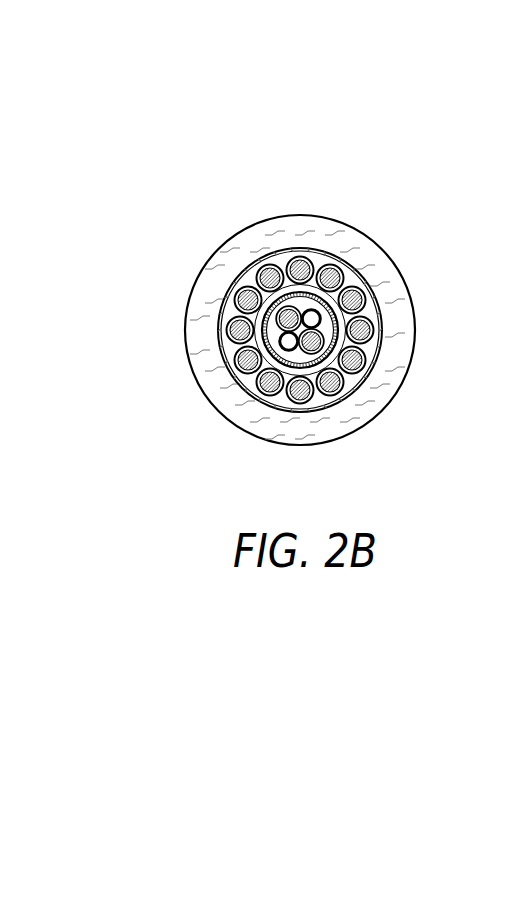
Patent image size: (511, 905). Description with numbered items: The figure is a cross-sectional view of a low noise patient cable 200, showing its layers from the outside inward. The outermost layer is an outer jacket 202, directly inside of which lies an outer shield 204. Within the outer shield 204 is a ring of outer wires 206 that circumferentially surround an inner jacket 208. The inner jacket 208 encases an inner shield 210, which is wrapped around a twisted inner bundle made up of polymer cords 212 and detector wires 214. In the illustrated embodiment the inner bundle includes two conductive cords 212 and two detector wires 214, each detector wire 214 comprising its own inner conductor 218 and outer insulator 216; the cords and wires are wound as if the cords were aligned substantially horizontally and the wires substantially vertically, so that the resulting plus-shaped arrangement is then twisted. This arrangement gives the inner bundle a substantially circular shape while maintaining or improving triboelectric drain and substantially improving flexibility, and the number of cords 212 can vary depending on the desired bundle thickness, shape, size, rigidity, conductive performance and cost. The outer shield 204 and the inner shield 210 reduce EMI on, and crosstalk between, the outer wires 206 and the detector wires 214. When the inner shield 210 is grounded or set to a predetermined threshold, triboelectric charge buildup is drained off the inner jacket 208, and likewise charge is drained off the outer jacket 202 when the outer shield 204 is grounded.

The low noise patient cable 200 is at (210, 141).
The outer jacket 202 is at (365, 238).
The outer shield 204 is at (372, 290).
The outer wires 206 is at (363, 333).
The inner jacket 208 is at (348, 350).
The inner shield 210 is at (317, 373).
The polymer cords 212 is at (255, 380).
The detector wires 214 is at (293, 312).
The outer insulator 216 is at (313, 352).
The inner conductor 218 is at (315, 417).